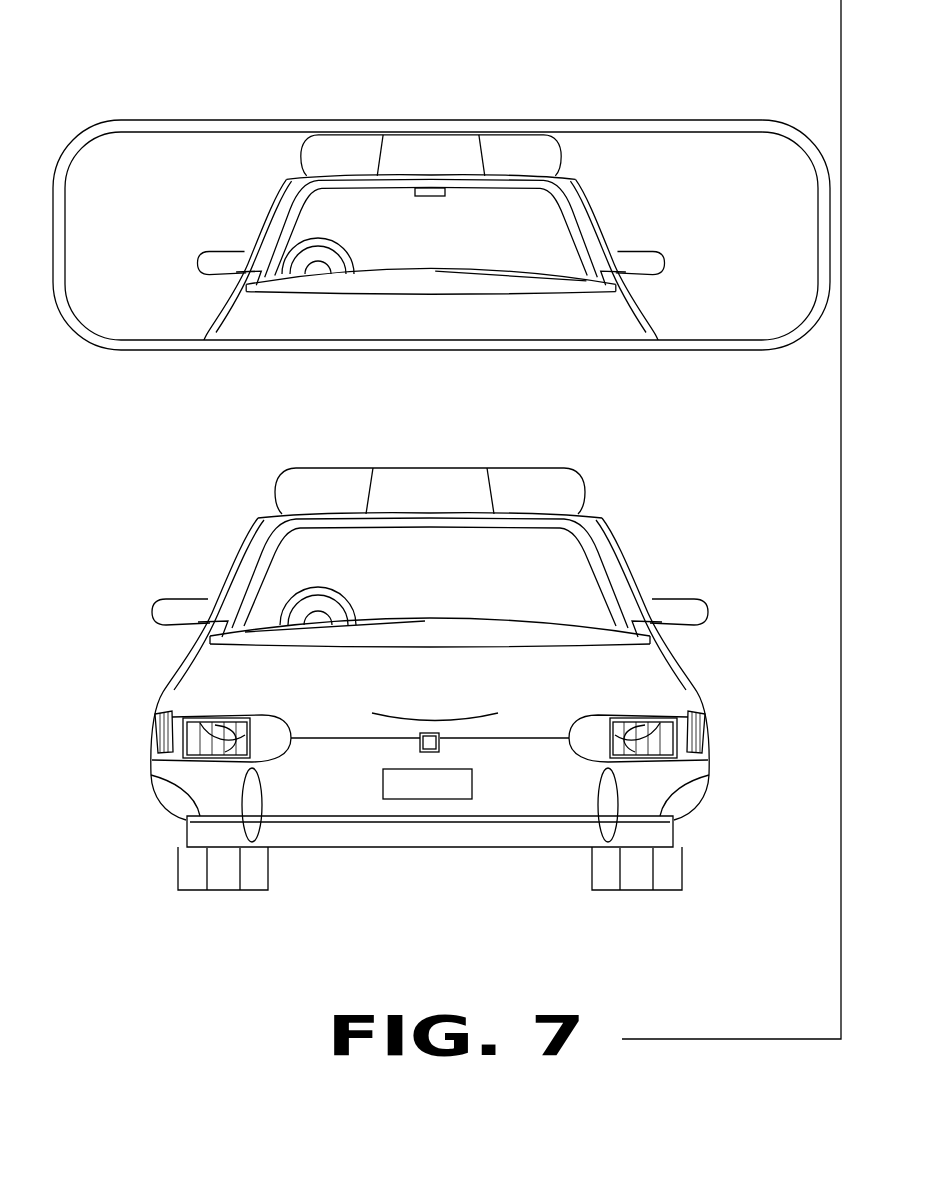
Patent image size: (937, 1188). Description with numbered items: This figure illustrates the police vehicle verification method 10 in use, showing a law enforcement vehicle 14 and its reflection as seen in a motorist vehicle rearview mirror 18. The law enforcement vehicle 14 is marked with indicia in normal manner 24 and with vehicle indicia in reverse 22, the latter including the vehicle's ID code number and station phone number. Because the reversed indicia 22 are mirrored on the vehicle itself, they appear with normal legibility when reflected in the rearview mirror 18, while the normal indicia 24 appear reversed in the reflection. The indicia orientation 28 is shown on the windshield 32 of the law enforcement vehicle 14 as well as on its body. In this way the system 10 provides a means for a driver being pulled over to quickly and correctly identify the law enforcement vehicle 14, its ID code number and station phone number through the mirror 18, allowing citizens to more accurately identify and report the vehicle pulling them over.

The police vehicle verification method 10 is at (740, 114).
The law enforcement vehicle 14 is at (363, 803).
The motorist vehicle rearview mirror 18 is at (182, 193).
The vehicle indicia in reverse 22 is at (505, 696).
The indicia in normal manner 24 is at (215, 684).
The indicia orientation 28 is at (577, 552).
The windshield 32 is at (262, 585).